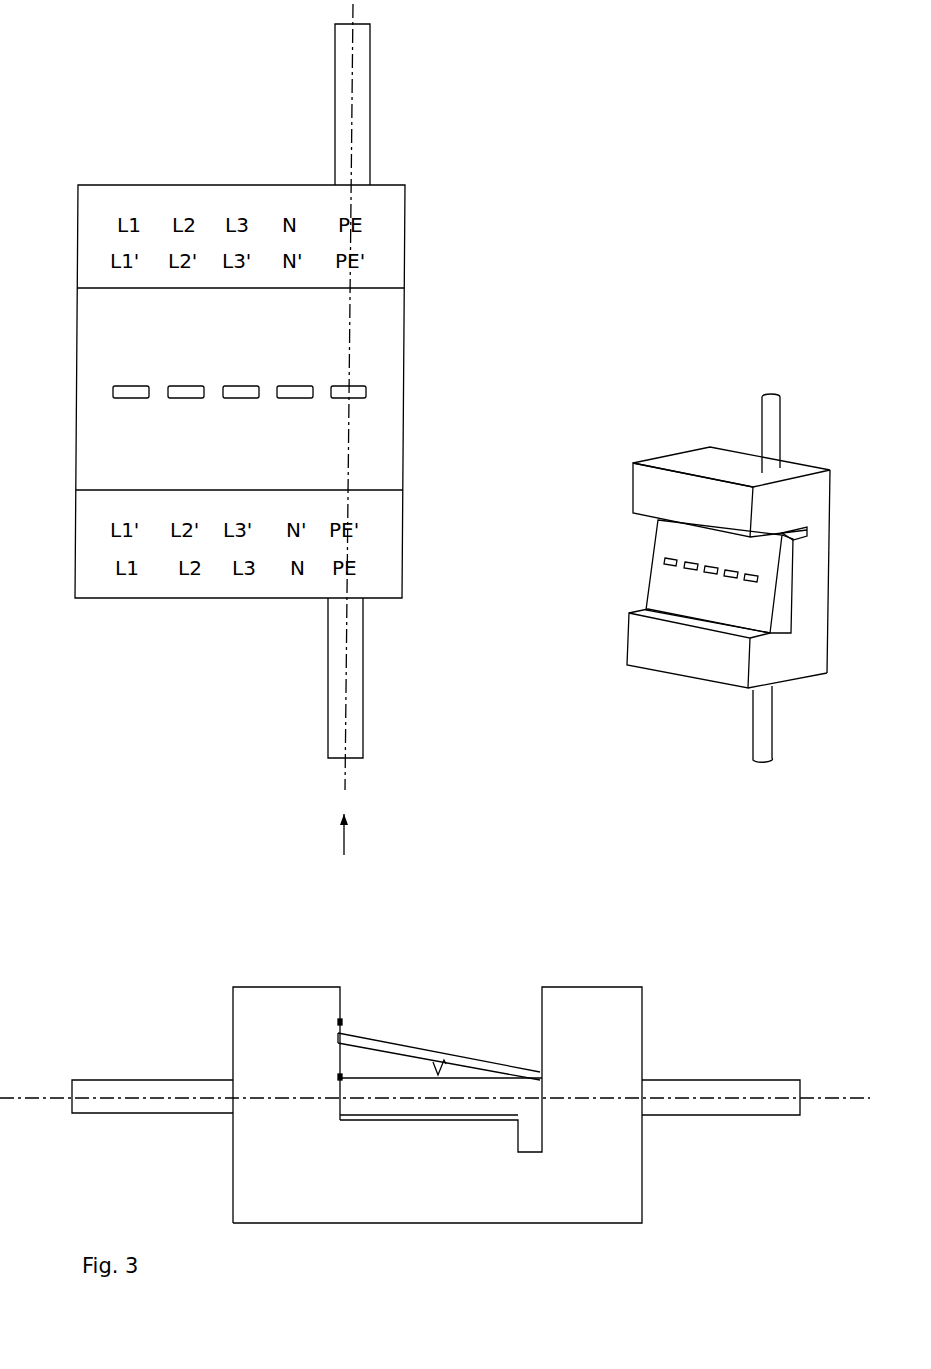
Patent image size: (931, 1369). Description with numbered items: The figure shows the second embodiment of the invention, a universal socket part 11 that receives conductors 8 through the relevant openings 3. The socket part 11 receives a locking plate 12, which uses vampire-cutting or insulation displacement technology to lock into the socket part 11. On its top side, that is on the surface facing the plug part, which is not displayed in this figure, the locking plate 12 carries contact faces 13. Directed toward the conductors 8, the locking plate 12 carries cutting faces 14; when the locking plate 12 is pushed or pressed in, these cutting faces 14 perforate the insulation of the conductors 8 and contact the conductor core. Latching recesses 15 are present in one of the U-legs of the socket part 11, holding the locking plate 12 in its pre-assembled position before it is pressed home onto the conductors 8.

The openings 3 is at (232, 1115).
The conductors 8 is at (363, 685).
The socket part 11 is at (402, 545).
The locking plate 12 is at (383, 340).
The contact faces 13 is at (368, 398).
The cutting faces 14 is at (445, 1067).
The latching recesses 15 is at (341, 1077).